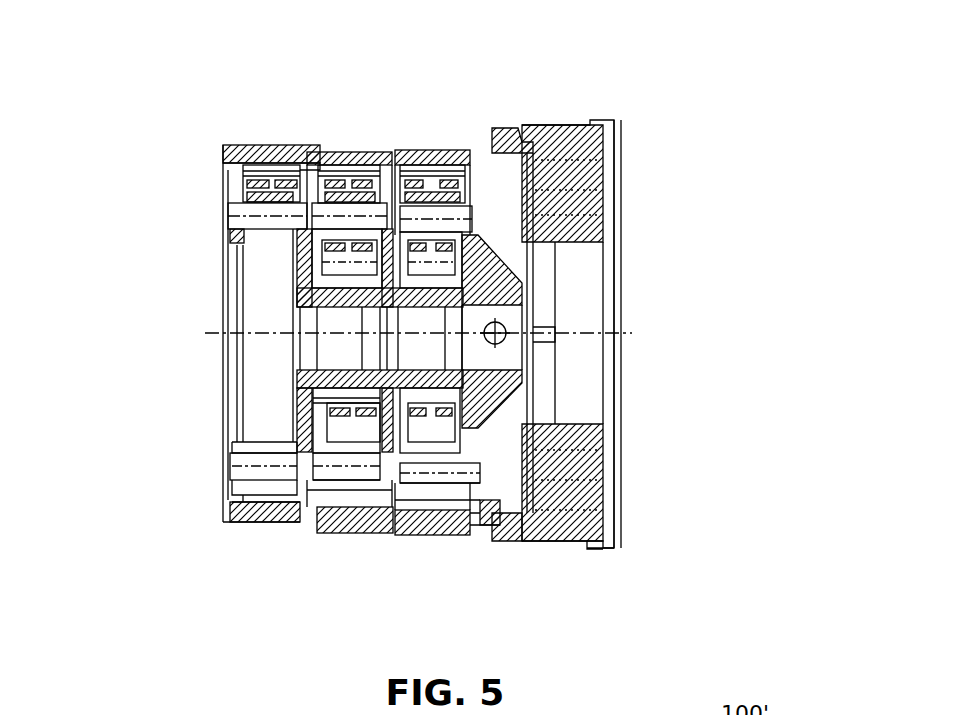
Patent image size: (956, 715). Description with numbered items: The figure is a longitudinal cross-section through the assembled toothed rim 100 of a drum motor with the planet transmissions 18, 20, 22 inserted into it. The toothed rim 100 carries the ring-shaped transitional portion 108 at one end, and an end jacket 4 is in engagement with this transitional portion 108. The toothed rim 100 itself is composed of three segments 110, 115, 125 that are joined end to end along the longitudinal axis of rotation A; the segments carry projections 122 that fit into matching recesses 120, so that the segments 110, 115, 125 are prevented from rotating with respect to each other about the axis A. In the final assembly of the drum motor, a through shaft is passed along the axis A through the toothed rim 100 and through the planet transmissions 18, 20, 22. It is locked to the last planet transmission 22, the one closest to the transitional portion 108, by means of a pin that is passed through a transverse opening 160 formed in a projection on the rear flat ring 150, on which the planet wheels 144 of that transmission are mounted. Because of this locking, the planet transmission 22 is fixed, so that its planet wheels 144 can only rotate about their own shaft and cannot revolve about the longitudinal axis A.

The end jacket 4 is at (603, 548).
The planet transmission 18 is at (243, 212).
The planet transmission 20 is at (342, 208).
The planet transmission 22 is at (428, 185).
The toothed rim 100 is at (347, 573).
The ring-shaped transitional portion 108 is at (487, 541).
The segment 110 is at (235, 528).
The segment 115 is at (320, 533).
The recess 120 is at (346, 152).
The projection 122 is at (303, 143).
The segment 125 is at (423, 535).
The planet wheel 144 is at (417, 150).
The rear flat ring 150 is at (500, 128).
The transverse opening 160 is at (503, 326).
The longitudinal axis of rotation A is at (218, 343).